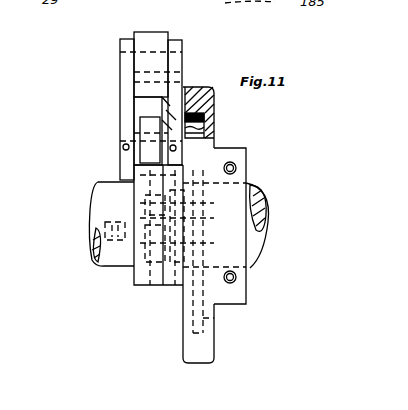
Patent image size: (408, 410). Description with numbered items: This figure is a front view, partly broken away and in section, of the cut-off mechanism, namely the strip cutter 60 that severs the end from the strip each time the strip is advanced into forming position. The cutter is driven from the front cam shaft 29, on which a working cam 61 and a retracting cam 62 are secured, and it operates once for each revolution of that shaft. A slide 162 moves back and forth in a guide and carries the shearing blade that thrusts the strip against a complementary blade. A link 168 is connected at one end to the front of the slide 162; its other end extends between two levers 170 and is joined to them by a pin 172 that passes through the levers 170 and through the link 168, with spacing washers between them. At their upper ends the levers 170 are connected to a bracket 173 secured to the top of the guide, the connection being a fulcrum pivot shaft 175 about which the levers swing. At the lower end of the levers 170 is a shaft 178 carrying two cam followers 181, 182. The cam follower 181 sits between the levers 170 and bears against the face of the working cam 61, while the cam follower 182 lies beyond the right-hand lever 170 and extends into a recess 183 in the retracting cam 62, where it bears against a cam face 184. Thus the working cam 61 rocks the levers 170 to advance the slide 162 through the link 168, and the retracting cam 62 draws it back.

The cam shaft 29 is at (250, 242).
The strip cutter 60 is at (110, 77).
The working cam 61 is at (132, 274).
The retracting cam 62 is at (214, 135).
The slide 162 is at (216, 101).
The link 168 is at (140, 127).
The levers 170 is at (120, 103).
The pin 172 is at (122, 143).
The bracket 173 is at (156, 36).
The fulcrum pivot shaft 175 is at (182, 52).
The shaft 178 is at (92, 241).
The cam follower 181 is at (153, 270).
The cam follower 182 is at (186, 298).
The recess 183 is at (214, 318).
The cam face 184 is at (214, 125).